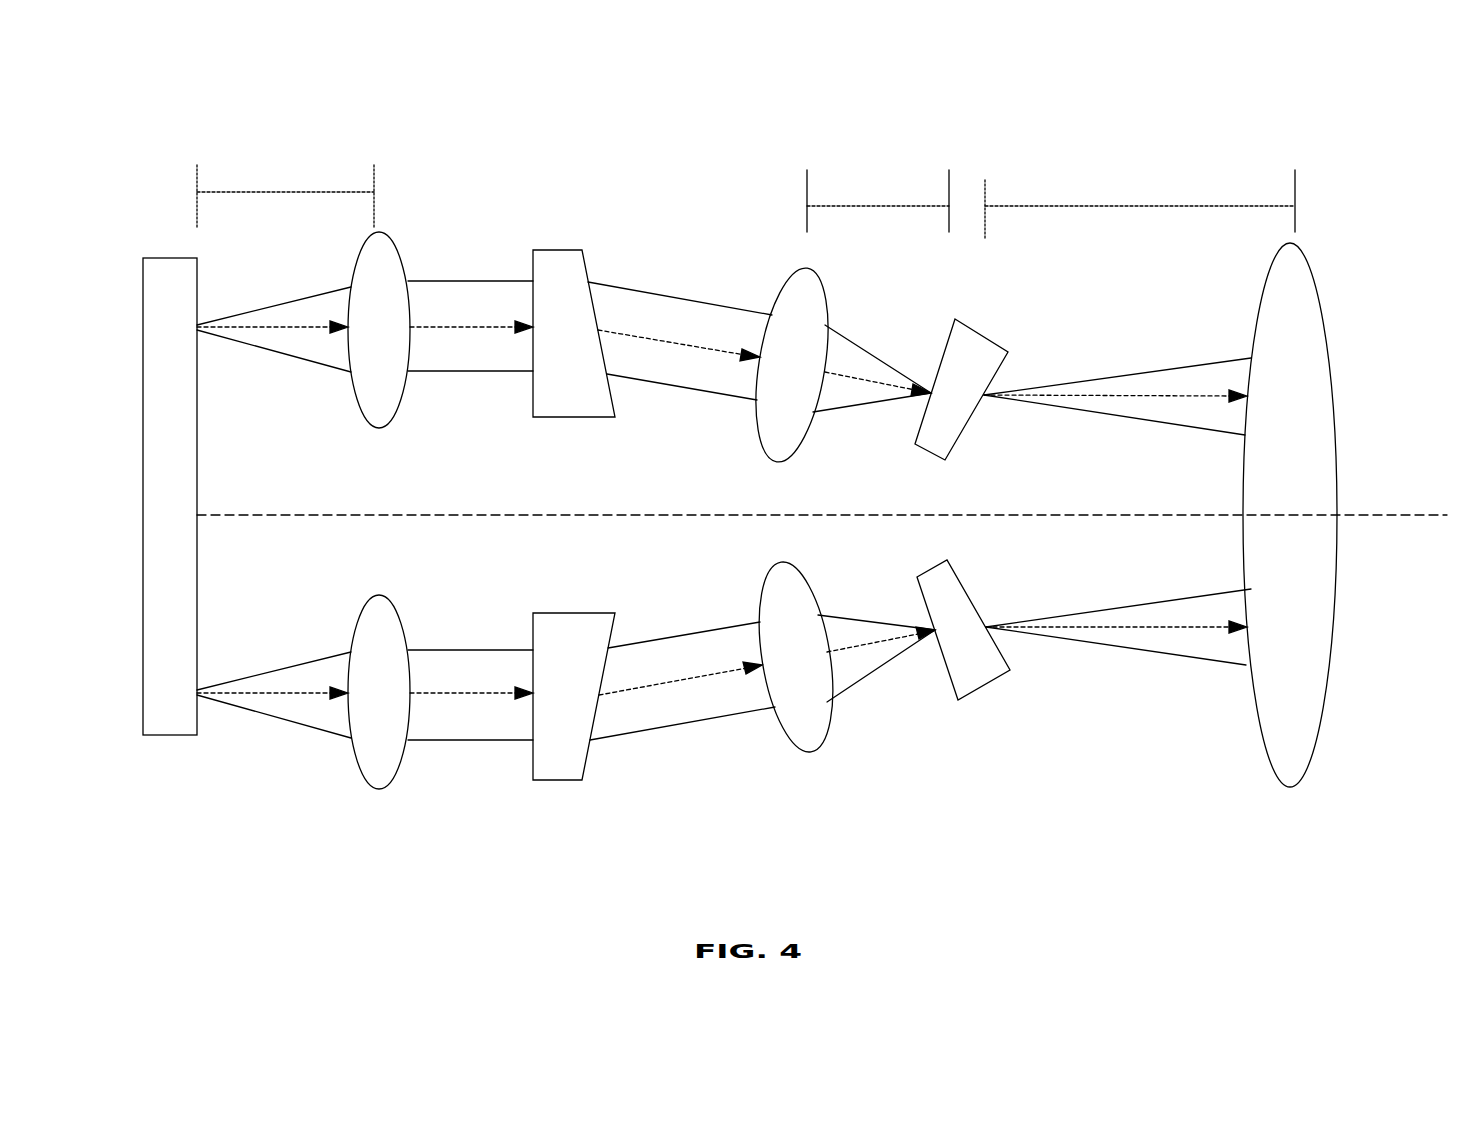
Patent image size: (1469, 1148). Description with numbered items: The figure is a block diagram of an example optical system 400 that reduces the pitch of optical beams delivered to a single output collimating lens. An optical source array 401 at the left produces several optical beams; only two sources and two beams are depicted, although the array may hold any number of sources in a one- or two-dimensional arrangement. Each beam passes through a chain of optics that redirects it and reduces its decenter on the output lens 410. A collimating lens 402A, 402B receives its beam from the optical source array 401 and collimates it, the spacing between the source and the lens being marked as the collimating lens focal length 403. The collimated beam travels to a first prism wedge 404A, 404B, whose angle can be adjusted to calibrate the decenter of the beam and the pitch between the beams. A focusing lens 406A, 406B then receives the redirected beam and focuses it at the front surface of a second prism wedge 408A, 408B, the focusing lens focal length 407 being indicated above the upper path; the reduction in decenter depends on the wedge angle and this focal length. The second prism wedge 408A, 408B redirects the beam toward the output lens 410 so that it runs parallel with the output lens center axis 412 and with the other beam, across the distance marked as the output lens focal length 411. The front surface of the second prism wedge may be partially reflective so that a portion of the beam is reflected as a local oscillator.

The optical system 400 is at (497, 90).
The optical source array 401 is at (162, 735).
The collimating lens 402A is at (388, 420).
The collimating lens 402B is at (377, 787).
The collimating lens focal length 403 is at (285, 160).
The first prism wedge 404A is at (580, 417).
The first prism wedge 404B is at (560, 780).
The focusing lens 406A is at (780, 460).
The focusing lens 406B is at (813, 750).
The focusing lens focal length 407 is at (878, 176).
The second prism wedge 408A is at (953, 447).
The second prism wedge 408B is at (990, 682).
The output lens 410 is at (1268, 753).
The output lens focal length 411 is at (1140, 180).
The output lens center axis 412 is at (1358, 515).